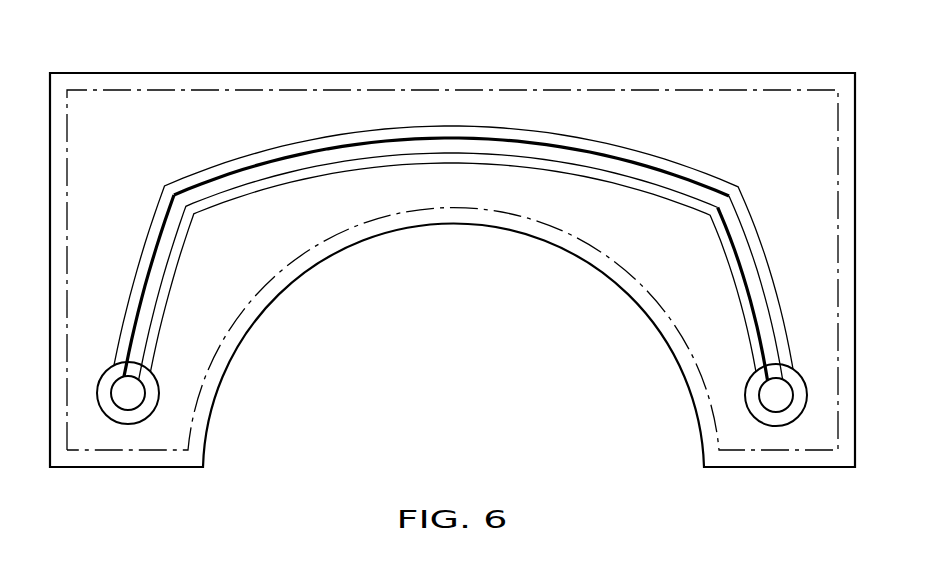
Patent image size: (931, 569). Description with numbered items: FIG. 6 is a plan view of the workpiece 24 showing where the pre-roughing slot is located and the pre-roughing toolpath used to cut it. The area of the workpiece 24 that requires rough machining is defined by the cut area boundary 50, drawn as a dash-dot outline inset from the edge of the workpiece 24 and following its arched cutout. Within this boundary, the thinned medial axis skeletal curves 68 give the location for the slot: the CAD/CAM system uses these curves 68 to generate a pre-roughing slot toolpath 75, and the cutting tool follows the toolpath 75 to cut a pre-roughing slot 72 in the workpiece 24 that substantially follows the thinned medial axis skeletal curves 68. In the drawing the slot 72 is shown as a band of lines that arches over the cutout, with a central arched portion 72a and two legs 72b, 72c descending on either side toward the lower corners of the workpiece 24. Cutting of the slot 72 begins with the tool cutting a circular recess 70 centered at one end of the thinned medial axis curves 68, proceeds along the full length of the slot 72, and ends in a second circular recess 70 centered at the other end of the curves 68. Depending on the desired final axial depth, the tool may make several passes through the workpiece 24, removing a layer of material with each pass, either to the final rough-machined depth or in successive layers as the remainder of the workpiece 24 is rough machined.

The workpiece 24 is at (800, 84).
The cut area boundary 50 is at (190, 87).
The thinned medial axis skeletal curves 68 is at (390, 113).
The circular recess 70 is at (120, 386).
The pre-roughing slot 72 is at (648, 155).
The heating element segment 72a is at (222, 197).
The heating element left segment 72b is at (164, 234).
The heating element right segment 72c is at (741, 233).
The pre-roughing slot toolpath 75 is at (242, 166).